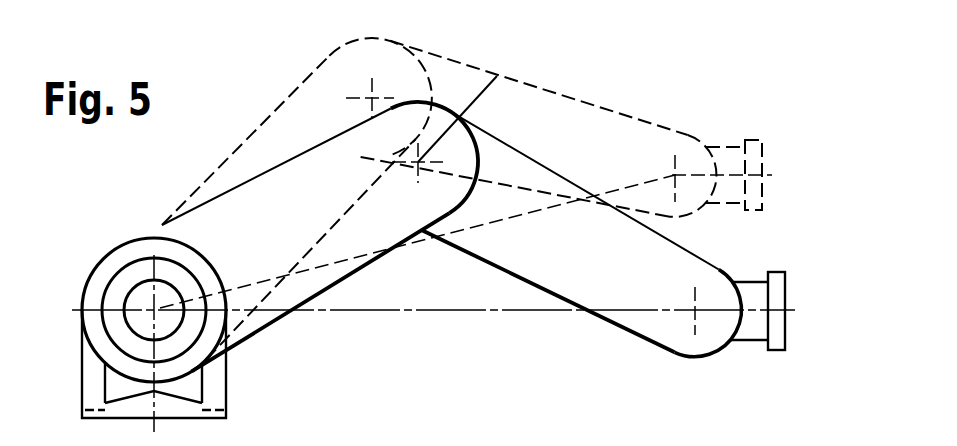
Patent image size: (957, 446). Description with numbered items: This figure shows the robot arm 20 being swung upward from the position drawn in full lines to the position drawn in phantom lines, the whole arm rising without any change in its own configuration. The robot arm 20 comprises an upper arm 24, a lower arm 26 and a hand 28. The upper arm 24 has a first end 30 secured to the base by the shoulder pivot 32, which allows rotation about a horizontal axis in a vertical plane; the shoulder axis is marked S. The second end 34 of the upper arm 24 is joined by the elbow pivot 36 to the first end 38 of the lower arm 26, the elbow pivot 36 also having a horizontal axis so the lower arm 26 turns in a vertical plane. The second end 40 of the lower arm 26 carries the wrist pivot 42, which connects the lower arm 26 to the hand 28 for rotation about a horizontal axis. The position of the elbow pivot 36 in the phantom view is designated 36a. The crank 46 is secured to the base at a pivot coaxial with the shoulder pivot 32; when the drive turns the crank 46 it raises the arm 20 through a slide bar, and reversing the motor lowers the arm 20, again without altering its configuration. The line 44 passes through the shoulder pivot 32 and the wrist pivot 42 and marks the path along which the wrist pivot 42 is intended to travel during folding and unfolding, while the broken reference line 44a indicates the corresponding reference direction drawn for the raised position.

The robot arm 20 is at (632, 104).
The upper arm 24 is at (270, 219).
The lower arm 26 is at (592, 233).
The hand 28 is at (752, 330).
The first end of the upper arm 30 is at (161, 225).
The shoulder pivot 32 is at (153, 309).
The second end of the upper arm 34 is at (333, 140).
The elbow pivot 36 is at (497, 76).
The phantom position of the elbow pivot 36a is at (373, 97).
The first end of the lower arm 38 is at (497, 140).
The second end of the lower arm 40 is at (695, 258).
The wrist pivot 42 is at (690, 316).
The line 44 is at (452, 311).
The inclined reference line 44a is at (525, 216).
The crank 46 is at (130, 330).
The axis of the shoulder S is at (153, 309).